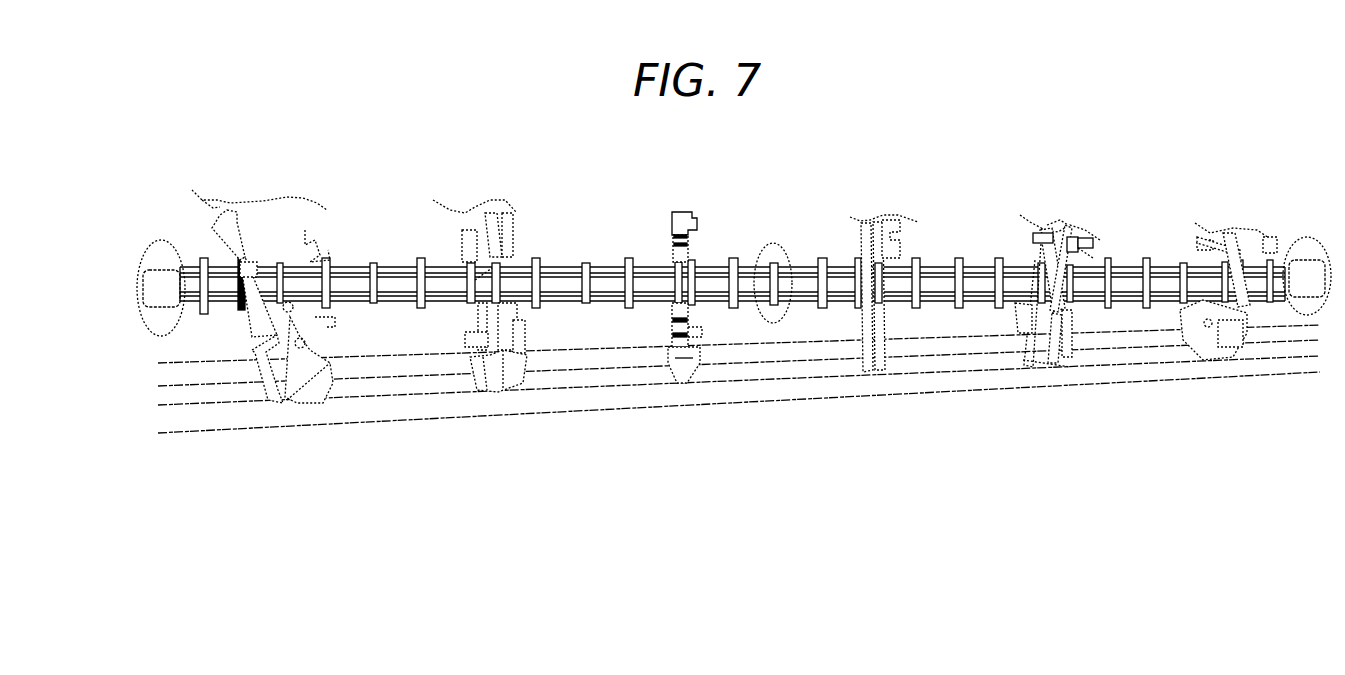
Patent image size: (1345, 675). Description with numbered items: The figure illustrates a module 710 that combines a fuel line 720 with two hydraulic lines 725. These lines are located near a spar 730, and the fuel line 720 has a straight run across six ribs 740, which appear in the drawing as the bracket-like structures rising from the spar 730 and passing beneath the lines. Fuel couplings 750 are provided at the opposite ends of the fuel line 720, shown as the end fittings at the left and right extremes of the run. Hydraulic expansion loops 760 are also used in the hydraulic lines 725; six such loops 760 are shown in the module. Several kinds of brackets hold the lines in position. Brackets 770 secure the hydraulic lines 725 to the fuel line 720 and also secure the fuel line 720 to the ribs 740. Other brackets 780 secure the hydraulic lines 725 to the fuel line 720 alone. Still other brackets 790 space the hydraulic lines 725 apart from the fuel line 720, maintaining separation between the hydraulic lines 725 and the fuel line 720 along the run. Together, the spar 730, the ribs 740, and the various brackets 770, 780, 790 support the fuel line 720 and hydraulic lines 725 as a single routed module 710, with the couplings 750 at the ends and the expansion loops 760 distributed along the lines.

The module 710 is at (1186, 130).
The fuel line 720 is at (557, 280).
The hydraulic lines 725 is at (590, 296).
The spar 730 is at (807, 393).
The ribs 740 is at (278, 195).
The fuel couplings 750 is at (157, 268).
The hydraulic expansion loops 760 is at (168, 332).
The brackets 770 is at (1040, 262).
The brackets 780 is at (917, 265).
The brackets 790 is at (915, 305).